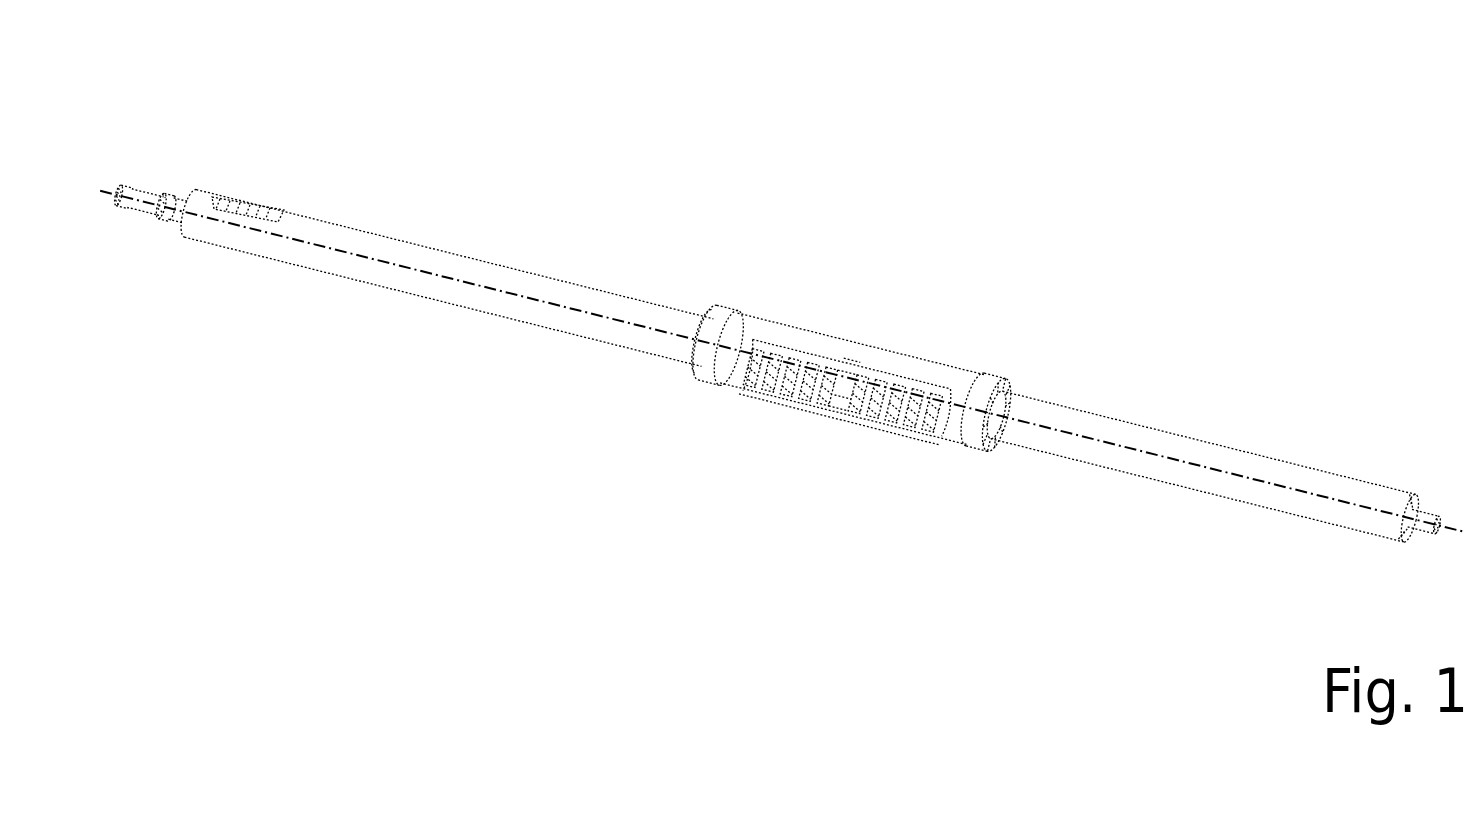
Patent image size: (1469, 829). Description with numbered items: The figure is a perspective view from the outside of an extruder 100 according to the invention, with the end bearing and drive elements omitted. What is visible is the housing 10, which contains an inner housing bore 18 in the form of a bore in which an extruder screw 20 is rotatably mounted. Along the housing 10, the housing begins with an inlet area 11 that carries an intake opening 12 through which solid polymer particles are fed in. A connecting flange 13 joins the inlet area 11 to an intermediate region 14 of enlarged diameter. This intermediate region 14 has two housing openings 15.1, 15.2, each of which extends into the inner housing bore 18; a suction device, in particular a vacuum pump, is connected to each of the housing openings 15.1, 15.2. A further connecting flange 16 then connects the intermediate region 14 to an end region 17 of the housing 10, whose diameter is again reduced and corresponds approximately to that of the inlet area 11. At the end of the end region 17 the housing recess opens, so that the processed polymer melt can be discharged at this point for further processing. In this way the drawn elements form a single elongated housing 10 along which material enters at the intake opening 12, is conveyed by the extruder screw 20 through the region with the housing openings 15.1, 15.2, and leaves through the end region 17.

The extruder 100 is at (1362, 178).
The housing 10 is at (627, 393).
The inlet area 11 is at (451, 253).
The intake opening 12 is at (263, 208).
The connecting flange 13 is at (734, 307).
The intermediate region 14 is at (857, 333).
The housing opening 15.1 is at (792, 377).
The housing opening 15.2 is at (920, 377).
The further connecting flange 16 is at (993, 377).
The end region 17 is at (1195, 480).
The inner housing bore 18 is at (1407, 535).
The extruder screw 20 is at (900, 388).